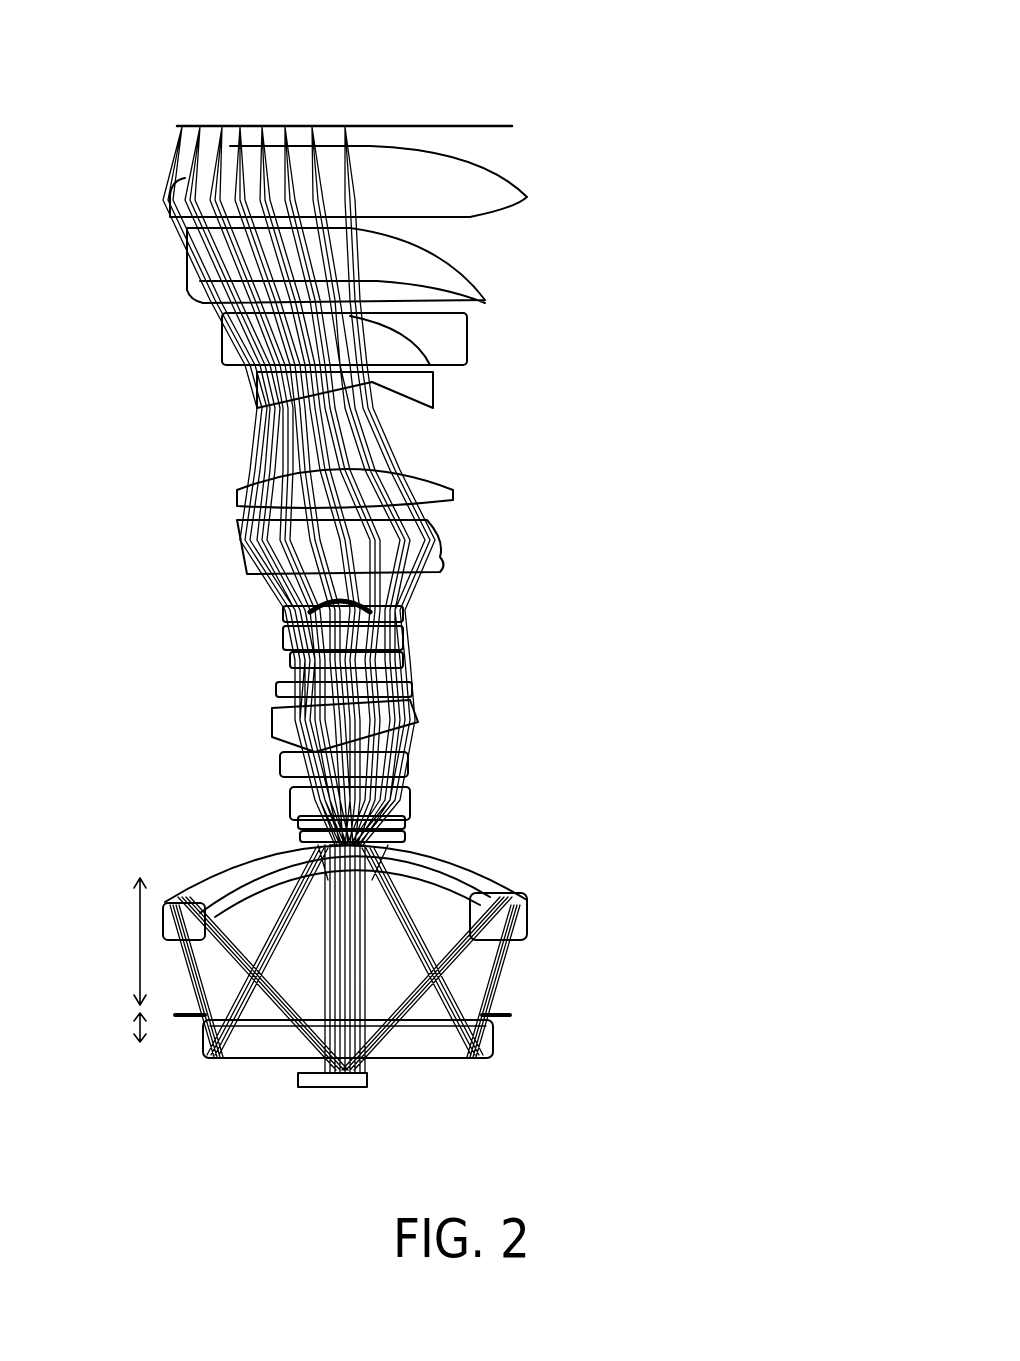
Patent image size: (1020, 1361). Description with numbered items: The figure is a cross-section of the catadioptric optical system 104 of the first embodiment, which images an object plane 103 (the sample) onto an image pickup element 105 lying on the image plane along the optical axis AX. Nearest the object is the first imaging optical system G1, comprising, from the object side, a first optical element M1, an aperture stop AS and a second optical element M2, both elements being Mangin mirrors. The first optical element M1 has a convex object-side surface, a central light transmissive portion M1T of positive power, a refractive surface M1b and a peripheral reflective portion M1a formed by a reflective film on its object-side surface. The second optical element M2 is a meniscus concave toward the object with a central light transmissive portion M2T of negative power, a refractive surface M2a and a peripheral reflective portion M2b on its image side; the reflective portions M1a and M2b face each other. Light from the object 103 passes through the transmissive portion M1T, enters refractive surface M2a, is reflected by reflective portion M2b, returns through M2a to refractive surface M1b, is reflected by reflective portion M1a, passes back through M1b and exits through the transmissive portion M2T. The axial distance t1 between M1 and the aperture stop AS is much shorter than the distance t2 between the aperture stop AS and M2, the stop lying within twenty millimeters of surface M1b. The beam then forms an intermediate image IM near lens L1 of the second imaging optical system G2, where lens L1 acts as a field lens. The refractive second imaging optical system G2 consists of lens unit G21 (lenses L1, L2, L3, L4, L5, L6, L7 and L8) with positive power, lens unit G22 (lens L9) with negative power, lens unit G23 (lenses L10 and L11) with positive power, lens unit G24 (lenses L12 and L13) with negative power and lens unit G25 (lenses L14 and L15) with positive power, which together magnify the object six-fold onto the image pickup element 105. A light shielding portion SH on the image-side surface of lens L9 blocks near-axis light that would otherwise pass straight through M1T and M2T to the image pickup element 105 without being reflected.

The catadioptric optical system 104 is at (442, 82).
The image pickup element 105 is at (280, 127).
The object plane 103 is at (363, 1087).
The lens L1 is at (400, 837).
The lens L2 is at (407, 818).
The lens L3 is at (407, 797).
The lens L4 is at (417, 757).
The lens L5 is at (413, 715).
The lens L6 is at (413, 685).
The lens L7 is at (403, 658).
The lens L8 is at (403, 643).
The lens L9 is at (400, 613).
The lens L10 is at (437, 558).
The lens L11 is at (455, 485).
The lens L12 is at (433, 395).
The lens L13 is at (467, 342).
The lens L14 is at (483, 303).
The lens L15 is at (518, 197).
The first imaging optical system G1 is at (698, 865).
The second imaging optical system G2 is at (695, 180).
The lens unit G21 is at (580, 603).
The lens unit G22 is at (580, 553).
The lens unit G23 is at (585, 465).
The lens unit G24 is at (585, 322).
The lens unit G25 is at (585, 162).
The light shielding portion SH is at (310, 612).
The intermediate image IM is at (340, 840).
The first optical element M1 is at (470, 1040).
The reflective portion M1a is at (460, 1058).
The refractive surface M1b is at (440, 1013).
The light transmissive portion M1T is at (393, 1070).
The second optical element M2 is at (507, 912).
The refractive surface M2a is at (467, 935).
The reflective portion M2b is at (500, 893).
The light transmissive portion M2T is at (280, 852).
The aperture stop AS is at (195, 1018).
The optical axis AX is at (343, 1088).
The distance t1 is at (107, 1027).
The distance t2 is at (107, 941).